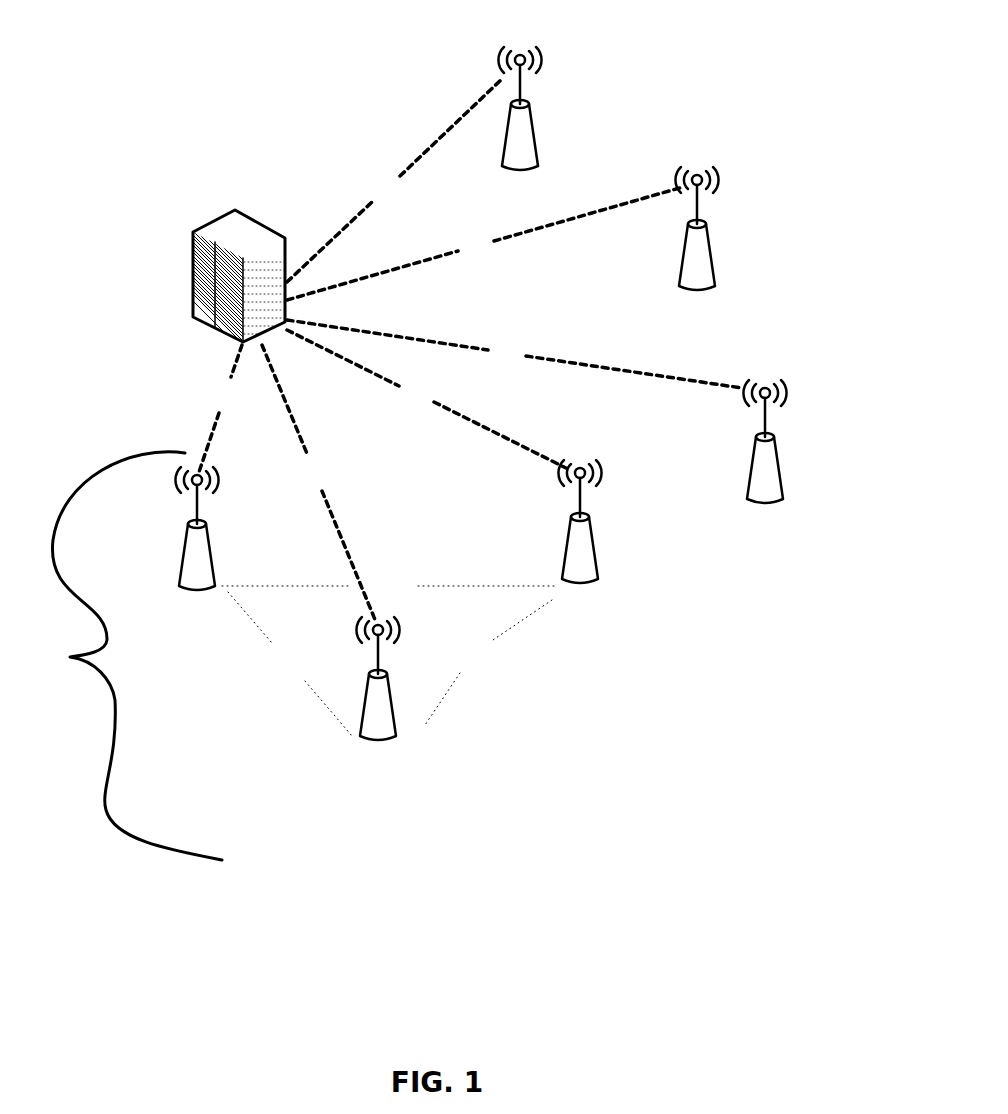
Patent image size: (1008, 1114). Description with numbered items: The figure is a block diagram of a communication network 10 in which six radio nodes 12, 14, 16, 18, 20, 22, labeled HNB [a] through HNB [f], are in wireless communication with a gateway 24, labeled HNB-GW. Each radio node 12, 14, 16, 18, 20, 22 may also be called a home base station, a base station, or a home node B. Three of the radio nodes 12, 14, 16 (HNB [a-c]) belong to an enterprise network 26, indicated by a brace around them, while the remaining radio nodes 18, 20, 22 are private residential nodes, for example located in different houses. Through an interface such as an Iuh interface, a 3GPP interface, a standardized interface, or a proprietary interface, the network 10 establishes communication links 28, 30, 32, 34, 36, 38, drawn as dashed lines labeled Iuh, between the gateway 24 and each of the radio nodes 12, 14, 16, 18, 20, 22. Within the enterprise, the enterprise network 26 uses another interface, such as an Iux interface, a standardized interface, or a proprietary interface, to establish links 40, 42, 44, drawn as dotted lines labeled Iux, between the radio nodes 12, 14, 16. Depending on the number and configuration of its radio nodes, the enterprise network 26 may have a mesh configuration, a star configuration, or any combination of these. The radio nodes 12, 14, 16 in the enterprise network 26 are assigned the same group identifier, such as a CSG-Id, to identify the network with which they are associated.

The communication network 10 is at (178, 68).
The radio node 12 is at (190, 557).
The radio node 14 is at (390, 737).
The radio node 16 is at (590, 556).
The radio node 18 is at (758, 495).
The radio node 20 is at (697, 283).
The radio node 22 is at (517, 162).
The gateway 24 is at (205, 292).
The enterprise network 26 is at (70, 657).
The communication link 28 is at (210, 447).
The communication link 30 is at (296, 424).
The communication link 32 is at (453, 412).
The communication link 34 is at (555, 360).
The communication link 36 is at (402, 267).
The communication link 38 is at (427, 148).
The link 40 is at (318, 692).
The link 42 is at (443, 707).
The link 44 is at (455, 596).